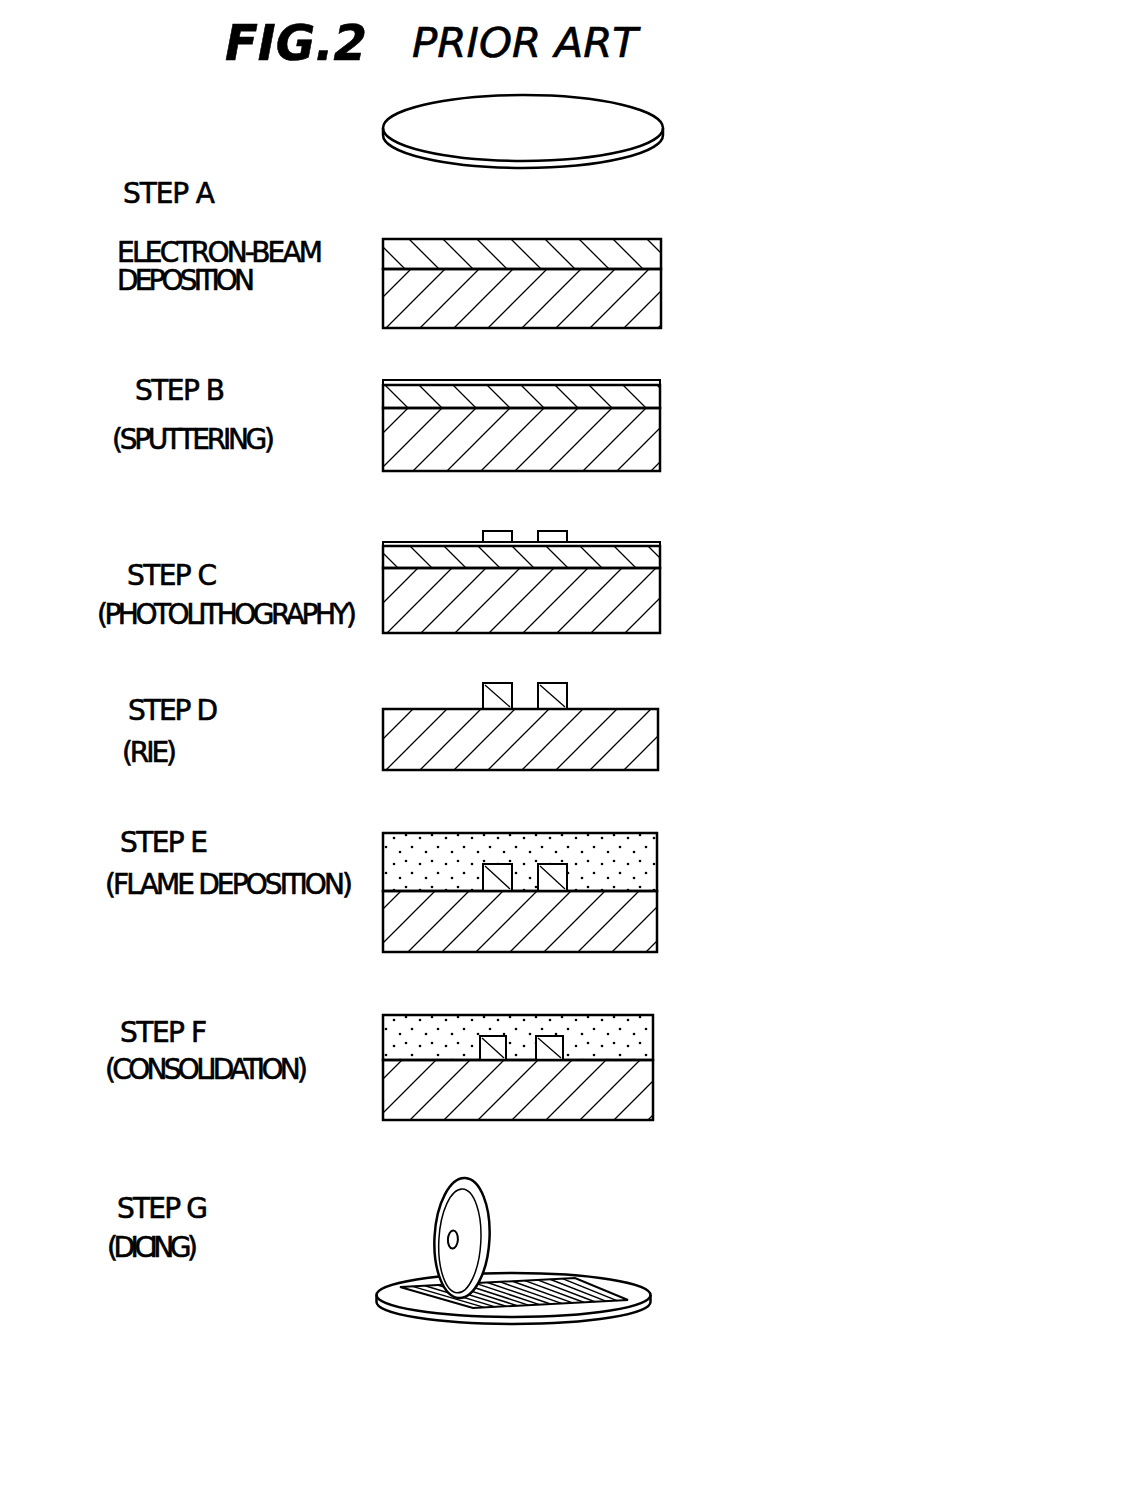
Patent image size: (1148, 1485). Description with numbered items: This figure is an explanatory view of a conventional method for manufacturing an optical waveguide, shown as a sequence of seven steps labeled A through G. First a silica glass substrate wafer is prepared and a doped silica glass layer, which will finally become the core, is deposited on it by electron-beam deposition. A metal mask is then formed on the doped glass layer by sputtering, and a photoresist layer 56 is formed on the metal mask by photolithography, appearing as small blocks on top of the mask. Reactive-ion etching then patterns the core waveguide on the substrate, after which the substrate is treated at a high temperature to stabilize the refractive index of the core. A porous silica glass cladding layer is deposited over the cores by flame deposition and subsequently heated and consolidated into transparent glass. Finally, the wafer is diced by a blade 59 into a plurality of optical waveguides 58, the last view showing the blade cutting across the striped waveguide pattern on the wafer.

The photoresist layer 56 is at (566, 531).
The optical waveguides 58 is at (575, 1287).
The blade 59 is at (486, 1202).